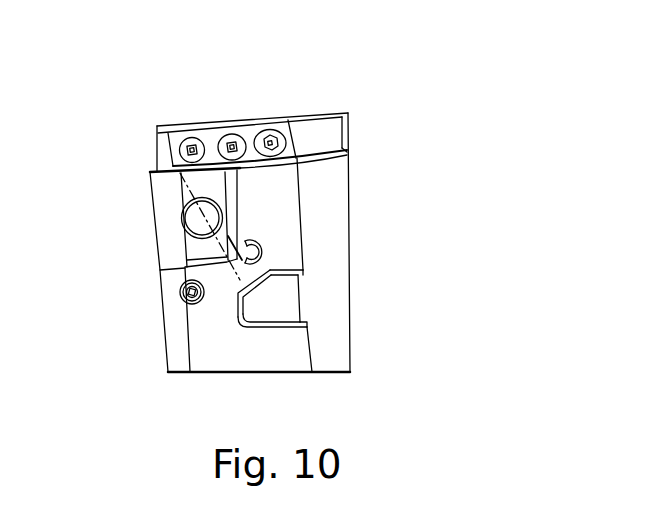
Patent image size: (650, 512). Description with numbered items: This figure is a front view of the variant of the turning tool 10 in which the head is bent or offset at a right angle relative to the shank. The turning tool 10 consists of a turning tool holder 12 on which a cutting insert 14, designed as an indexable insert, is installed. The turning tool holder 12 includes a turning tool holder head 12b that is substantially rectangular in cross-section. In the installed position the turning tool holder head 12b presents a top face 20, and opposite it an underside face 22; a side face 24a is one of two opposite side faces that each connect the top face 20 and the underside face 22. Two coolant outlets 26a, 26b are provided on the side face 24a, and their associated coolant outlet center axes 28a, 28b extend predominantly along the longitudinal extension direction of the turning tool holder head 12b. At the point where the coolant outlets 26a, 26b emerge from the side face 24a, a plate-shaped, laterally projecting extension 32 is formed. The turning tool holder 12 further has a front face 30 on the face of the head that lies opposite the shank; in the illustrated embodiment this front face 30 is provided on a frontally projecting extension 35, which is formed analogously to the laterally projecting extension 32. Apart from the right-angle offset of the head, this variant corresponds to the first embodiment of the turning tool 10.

The turning tool 10 is at (371, 95).
The turning tool holder 12 is at (313, 295).
The turning tool holder head 12b is at (286, 114).
The cutting insert 14 is at (163, 222).
The top face 20 is at (240, 98).
The underside face 22 is at (310, 383).
The side face 24a is at (206, 348).
The coolant outlet 26a is at (260, 290).
The coolant outlet 26b is at (257, 316).
The coolant outlet center axis 28a is at (246, 240).
The coolant outlet center axis 28b is at (238, 284).
The front face 30 is at (128, 197).
The laterally projecting extension 32 is at (265, 316).
The frontally projecting extension 35 is at (156, 280).